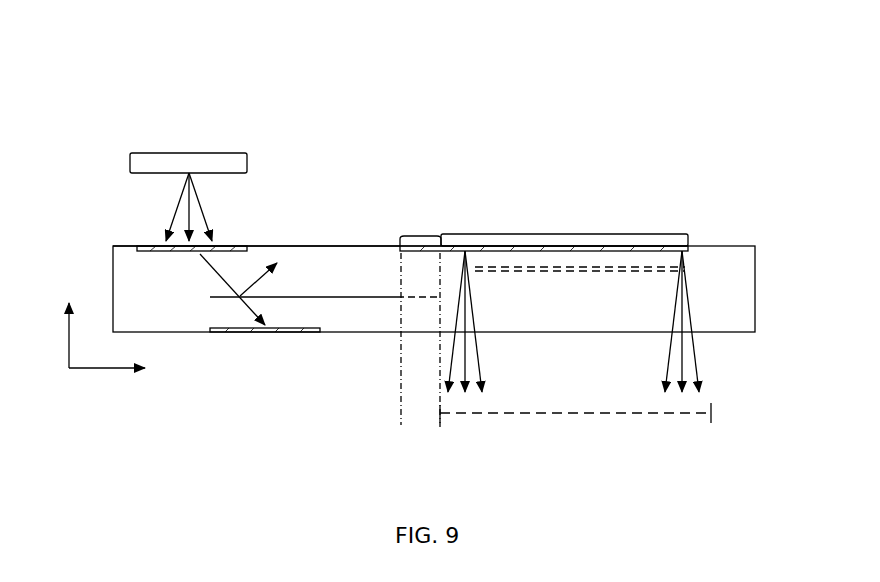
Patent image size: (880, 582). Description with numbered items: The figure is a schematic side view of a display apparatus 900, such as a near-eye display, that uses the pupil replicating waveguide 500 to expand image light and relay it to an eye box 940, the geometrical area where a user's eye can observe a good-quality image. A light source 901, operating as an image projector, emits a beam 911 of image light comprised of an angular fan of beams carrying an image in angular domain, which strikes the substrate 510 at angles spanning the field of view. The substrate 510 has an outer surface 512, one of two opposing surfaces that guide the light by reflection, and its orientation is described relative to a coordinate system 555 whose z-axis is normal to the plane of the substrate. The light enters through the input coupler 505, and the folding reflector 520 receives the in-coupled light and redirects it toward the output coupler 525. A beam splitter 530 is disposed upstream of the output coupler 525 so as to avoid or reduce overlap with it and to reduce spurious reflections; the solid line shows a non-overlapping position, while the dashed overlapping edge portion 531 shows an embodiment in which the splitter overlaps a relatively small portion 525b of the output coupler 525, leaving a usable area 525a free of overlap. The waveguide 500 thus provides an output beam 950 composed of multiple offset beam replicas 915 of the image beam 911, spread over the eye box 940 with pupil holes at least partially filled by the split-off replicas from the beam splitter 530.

The display apparatus 900 is at (470, 24).
The pupil replicating waveguide 500 is at (412, 128).
The substrate 510 is at (745, 320).
The outer surface 512 is at (262, 243).
The input coupler 505 is at (158, 243).
The beam splitter 530 is at (283, 296).
The overlapping edge portion of the beam splitter 531 is at (421, 297).
The folding reflector 520 is at (292, 333).
The output coupler 525 is at (598, 244).
The usable area of the output coupler 525a is at (565, 235).
The portion of the output coupler 525b is at (421, 236).
The output beam 950 is at (690, 269).
The light source 901 is at (155, 152).
The beam of image light 911 is at (206, 223).
The beam replicas 915 is at (665, 360).
The eye box 940 is at (592, 412).
The coordinate system 555 is at (64, 382).